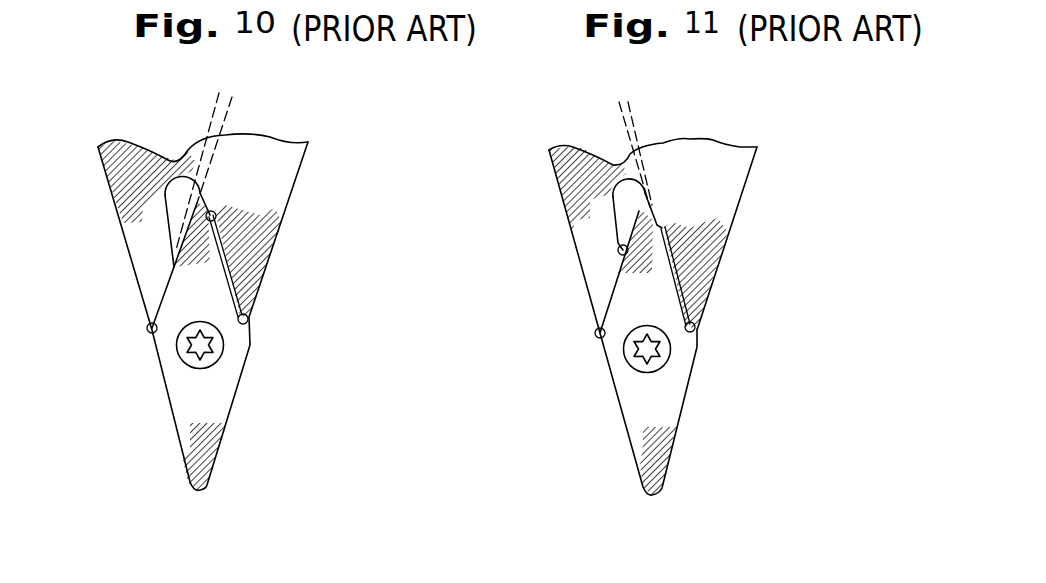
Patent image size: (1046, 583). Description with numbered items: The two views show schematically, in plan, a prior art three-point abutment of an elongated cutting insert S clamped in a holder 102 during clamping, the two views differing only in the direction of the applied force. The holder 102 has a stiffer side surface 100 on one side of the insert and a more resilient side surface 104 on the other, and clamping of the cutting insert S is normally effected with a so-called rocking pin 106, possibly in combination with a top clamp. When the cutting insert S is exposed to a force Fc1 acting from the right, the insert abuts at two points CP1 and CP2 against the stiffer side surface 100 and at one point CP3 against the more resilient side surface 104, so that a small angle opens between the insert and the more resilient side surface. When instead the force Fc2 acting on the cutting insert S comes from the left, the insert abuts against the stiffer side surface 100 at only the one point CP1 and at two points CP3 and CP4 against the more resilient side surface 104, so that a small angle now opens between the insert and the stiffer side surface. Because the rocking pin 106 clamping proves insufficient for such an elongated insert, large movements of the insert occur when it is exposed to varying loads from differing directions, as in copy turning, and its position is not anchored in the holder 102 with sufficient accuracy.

In FIG. 10, the cutting insert S is at (150, 417).
In FIG. 11, the cutting insert S is at (607, 408).
In FIG. 10, the stiffer side surface 100 is at (230, 263).
In FIG. 10, the holder 102 is at (298, 160).
In FIG. 10, the more resilient side surface 104 is at (169, 247).
In FIG. 10, the rocking pin 106 is at (200, 352).
In FIG. 10, the abutment point CP1 is at (248, 318).
In FIG. 11, the abutment point CP1 is at (696, 324).
In FIG. 10, the abutment point CP2 is at (218, 211).
In FIG. 10, the abutment point CP3 is at (146, 328).
In FIG. 11, the abutment point CP3 is at (595, 333).
In FIG. 11, the abutment point CP4 is at (619, 253).
In FIG. 10, the force Fc1 is at (317, 490).
In FIG. 11, the force Fc2 is at (647, 495).